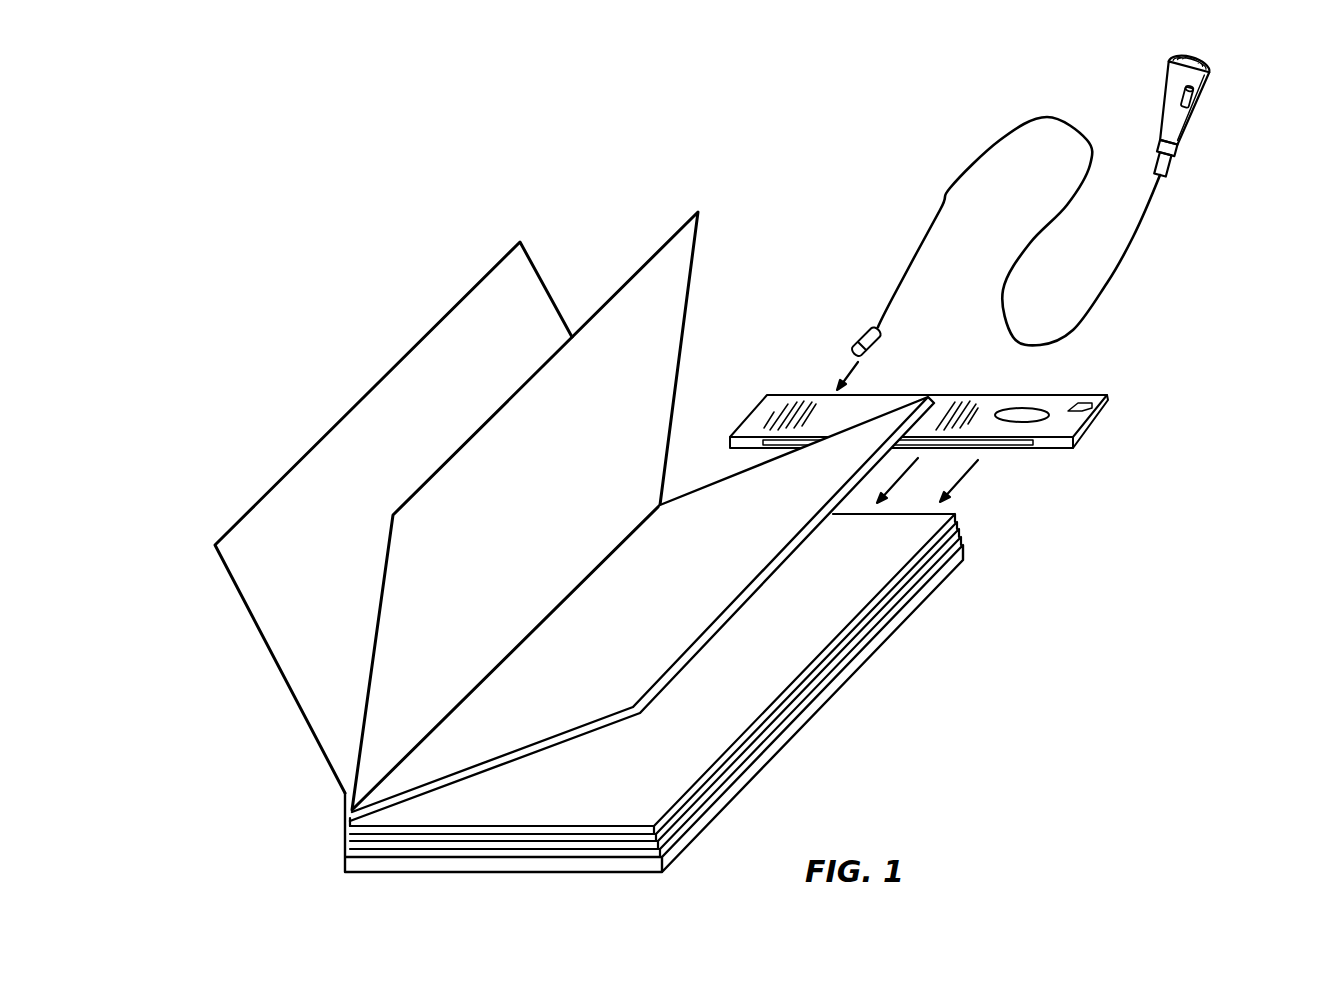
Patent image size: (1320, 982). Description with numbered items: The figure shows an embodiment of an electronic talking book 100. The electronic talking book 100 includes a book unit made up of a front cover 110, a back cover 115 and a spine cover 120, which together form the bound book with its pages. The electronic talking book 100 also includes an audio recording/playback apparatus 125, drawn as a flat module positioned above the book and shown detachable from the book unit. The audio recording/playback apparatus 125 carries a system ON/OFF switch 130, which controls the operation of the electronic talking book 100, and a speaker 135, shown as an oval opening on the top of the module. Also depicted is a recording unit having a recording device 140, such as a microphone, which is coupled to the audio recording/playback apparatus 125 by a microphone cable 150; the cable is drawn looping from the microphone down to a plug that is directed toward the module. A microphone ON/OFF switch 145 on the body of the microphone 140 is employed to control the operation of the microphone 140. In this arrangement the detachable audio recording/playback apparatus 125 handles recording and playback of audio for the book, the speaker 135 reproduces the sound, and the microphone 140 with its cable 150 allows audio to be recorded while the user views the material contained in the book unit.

The electronic talking book 100 is at (368, 228).
The front cover 110 is at (268, 652).
The back cover 115 is at (868, 655).
The spine cover 120 is at (345, 848).
The audio recording/playback apparatus 125 is at (1098, 428).
The system ON/OFF switch 130 is at (1108, 395).
The speaker 135 is at (1035, 407).
The recording device 140 is at (1212, 72).
The microphone ON/OFF switch 145 is at (1200, 95).
The microphone cable 150 is at (943, 193).